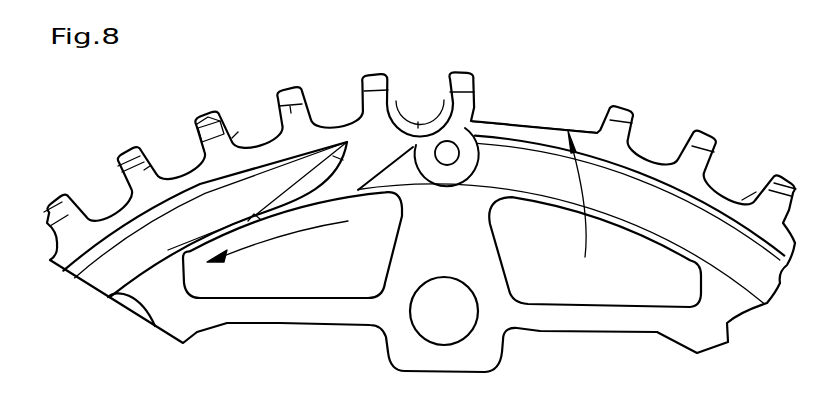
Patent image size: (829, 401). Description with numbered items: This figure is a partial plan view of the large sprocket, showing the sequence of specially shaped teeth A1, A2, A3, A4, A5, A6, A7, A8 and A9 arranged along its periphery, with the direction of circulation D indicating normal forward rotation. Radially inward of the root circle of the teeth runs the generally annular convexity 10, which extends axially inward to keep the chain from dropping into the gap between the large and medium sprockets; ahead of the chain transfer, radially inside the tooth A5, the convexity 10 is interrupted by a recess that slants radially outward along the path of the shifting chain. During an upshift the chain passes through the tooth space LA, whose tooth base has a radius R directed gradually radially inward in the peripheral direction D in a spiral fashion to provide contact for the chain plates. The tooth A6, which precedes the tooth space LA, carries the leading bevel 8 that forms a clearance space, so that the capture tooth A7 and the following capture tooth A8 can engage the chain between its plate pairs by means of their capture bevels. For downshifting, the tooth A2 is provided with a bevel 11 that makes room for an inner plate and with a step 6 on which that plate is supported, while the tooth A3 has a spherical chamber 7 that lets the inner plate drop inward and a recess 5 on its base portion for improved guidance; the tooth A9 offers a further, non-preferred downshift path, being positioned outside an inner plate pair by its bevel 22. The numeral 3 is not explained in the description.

The annular convexity 10 is at (675, 224).
The tooth gap recess 3 is at (418, 122).
The leading bevel 8 is at (473, 117).
The tooth space LA is at (550, 129).
The radius R is at (581, 220).
The peripheral direction D is at (285, 235).
The tooth A1 is at (57, 198).
The tooth A2 is at (142, 172).
The tooth A3 is at (235, 113).
The tooth A4 is at (292, 89).
The tooth A5 is at (371, 78).
The tooth A6 is at (459, 82).
The capture tooth A7 is at (627, 113).
The capture tooth A8 is at (702, 143).
The tooth A9 is at (768, 192).
The recess 5 is at (200, 147).
The step 6 is at (115, 165).
The spherical chamber 7 is at (200, 113).
The bevel 11 is at (124, 148).
The bevel 22 is at (750, 197).